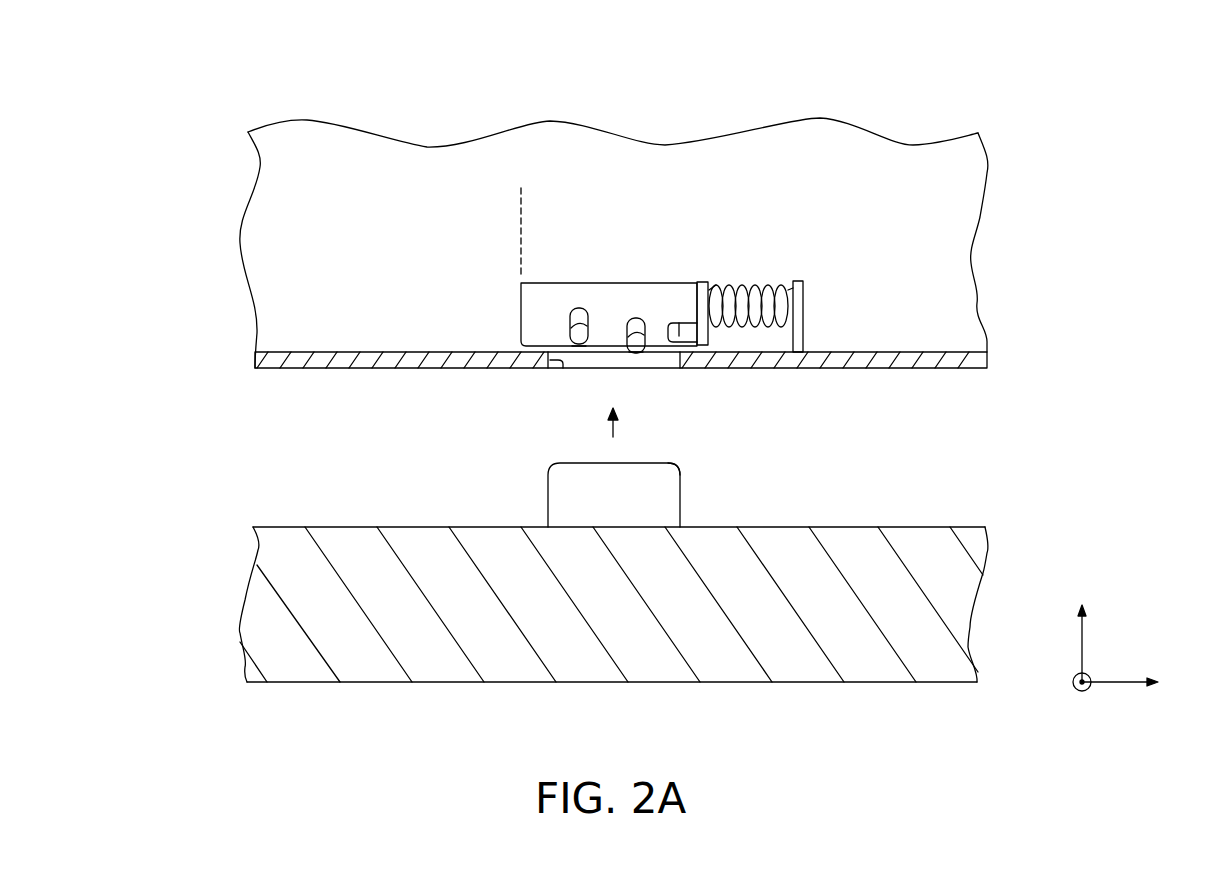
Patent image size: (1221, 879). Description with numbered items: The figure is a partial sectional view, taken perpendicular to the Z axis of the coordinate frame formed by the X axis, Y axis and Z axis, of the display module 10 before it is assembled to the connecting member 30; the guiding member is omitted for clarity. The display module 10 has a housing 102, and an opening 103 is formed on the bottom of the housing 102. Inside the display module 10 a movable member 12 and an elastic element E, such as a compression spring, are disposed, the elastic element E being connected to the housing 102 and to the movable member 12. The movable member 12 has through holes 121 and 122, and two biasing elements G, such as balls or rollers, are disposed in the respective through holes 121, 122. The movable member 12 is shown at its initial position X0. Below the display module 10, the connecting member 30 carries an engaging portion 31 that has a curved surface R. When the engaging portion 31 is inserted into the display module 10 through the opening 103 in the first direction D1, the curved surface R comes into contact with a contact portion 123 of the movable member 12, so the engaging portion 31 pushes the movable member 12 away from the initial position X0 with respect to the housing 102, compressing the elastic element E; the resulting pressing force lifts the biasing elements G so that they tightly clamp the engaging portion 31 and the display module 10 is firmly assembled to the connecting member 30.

The display module 10 is at (1005, 117).
The housing 102 is at (398, 362).
The opening 103 is at (560, 368).
The movable member 12 is at (543, 312).
The through hole 121 is at (576, 312).
The through hole 122 is at (632, 322).
The contact portion 123 is at (678, 328).
The elastic element E is at (787, 328).
The biasing elements G is at (580, 345).
The initial position X0 is at (519, 218).
The first direction D1 is at (633, 430).
The connecting member 30 is at (1005, 513).
The engaging portion 31 is at (568, 498).
The curved surface R is at (678, 466).
The X axis X is at (1130, 683).
The Y axis Y is at (1080, 629).
The Z axis Z is at (1070, 694).